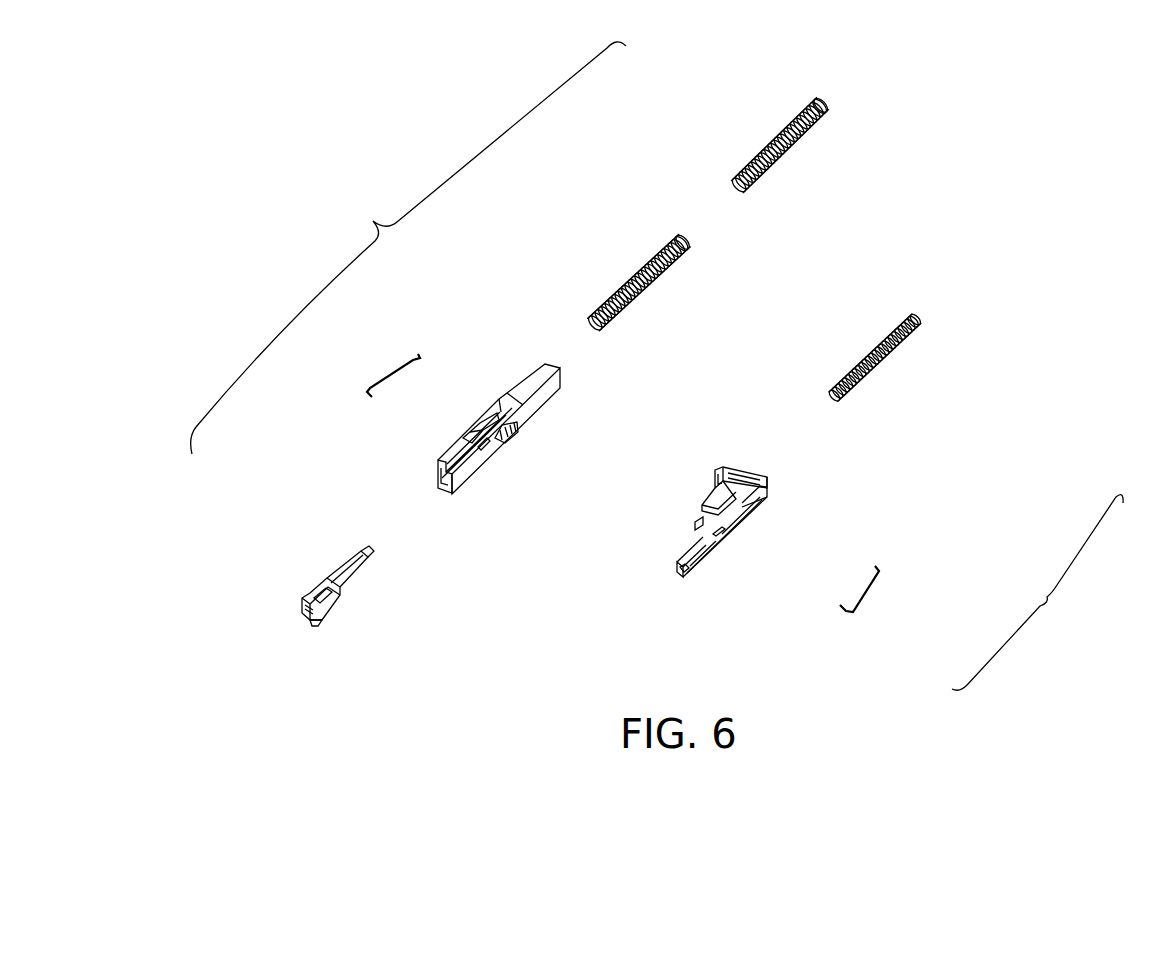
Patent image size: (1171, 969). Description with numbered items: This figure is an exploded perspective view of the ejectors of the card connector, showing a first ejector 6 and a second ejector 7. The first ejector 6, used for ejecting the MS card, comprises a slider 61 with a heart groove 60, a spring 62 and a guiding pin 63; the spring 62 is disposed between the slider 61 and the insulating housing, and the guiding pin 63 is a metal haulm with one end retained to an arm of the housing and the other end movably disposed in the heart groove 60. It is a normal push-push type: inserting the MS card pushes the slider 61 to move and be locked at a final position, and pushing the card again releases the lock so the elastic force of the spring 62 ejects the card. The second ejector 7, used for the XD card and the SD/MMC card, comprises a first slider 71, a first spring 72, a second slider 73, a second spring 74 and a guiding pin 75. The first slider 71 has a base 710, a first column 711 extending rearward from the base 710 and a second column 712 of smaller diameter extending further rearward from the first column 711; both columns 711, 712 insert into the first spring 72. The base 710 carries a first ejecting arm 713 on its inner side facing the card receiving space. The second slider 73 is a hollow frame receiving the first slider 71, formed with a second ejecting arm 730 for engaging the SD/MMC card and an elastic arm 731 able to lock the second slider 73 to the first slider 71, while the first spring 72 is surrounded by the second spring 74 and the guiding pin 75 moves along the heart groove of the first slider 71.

The first ejector 6 is at (738, 530).
The second ejector 7 is at (408, 248).
The heart groove 60 is at (692, 576).
The slider 61 is at (733, 486).
The spring 62 is at (886, 358).
The guiding pin 63 is at (863, 603).
The first slider 71 is at (307, 600).
The first spring 72 is at (633, 280).
The second slider 73 is at (531, 386).
The second spring 74 is at (767, 146).
The guiding pin 75 is at (392, 371).
The base 710 is at (317, 590).
The first column 711 is at (350, 580).
The second column 712 is at (367, 557).
The first ejecting arm 713 is at (320, 618).
The second ejecting arm 730 is at (517, 437).
The elastic arm 731 is at (475, 421).